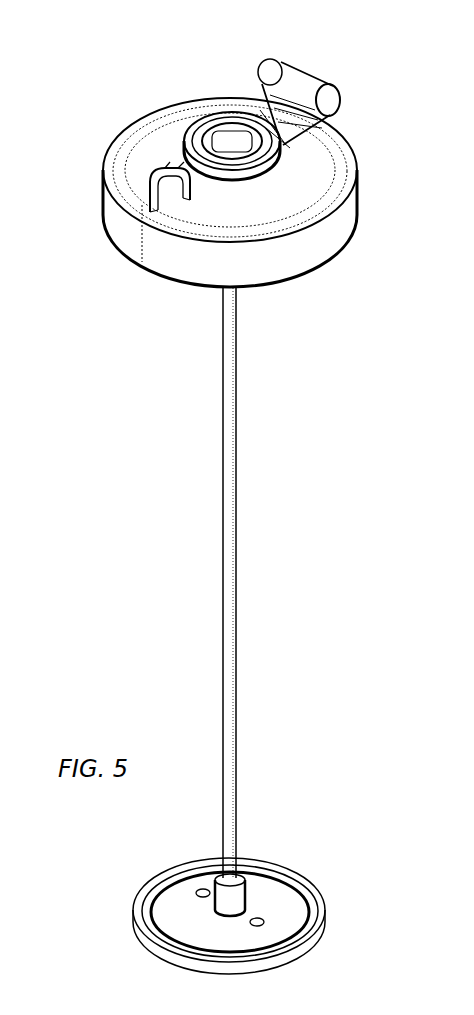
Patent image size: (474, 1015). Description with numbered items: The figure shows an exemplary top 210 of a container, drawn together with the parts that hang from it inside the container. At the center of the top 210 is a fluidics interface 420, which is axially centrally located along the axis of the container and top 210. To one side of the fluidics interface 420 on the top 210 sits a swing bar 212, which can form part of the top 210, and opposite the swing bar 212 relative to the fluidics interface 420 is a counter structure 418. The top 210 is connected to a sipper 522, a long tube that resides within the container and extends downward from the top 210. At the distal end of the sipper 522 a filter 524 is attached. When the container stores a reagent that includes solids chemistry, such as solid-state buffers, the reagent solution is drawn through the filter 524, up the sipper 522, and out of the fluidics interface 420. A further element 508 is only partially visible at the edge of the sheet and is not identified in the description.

The top 210 is at (327, 216).
The swing bar 212 is at (293, 78).
The counter structure 418 is at (152, 160).
The fluidics interface 420 is at (205, 127).
The sipper 522 is at (235, 500).
The filter 524 is at (283, 894).
The assembly (partially shown) 508 is at (11, 324).